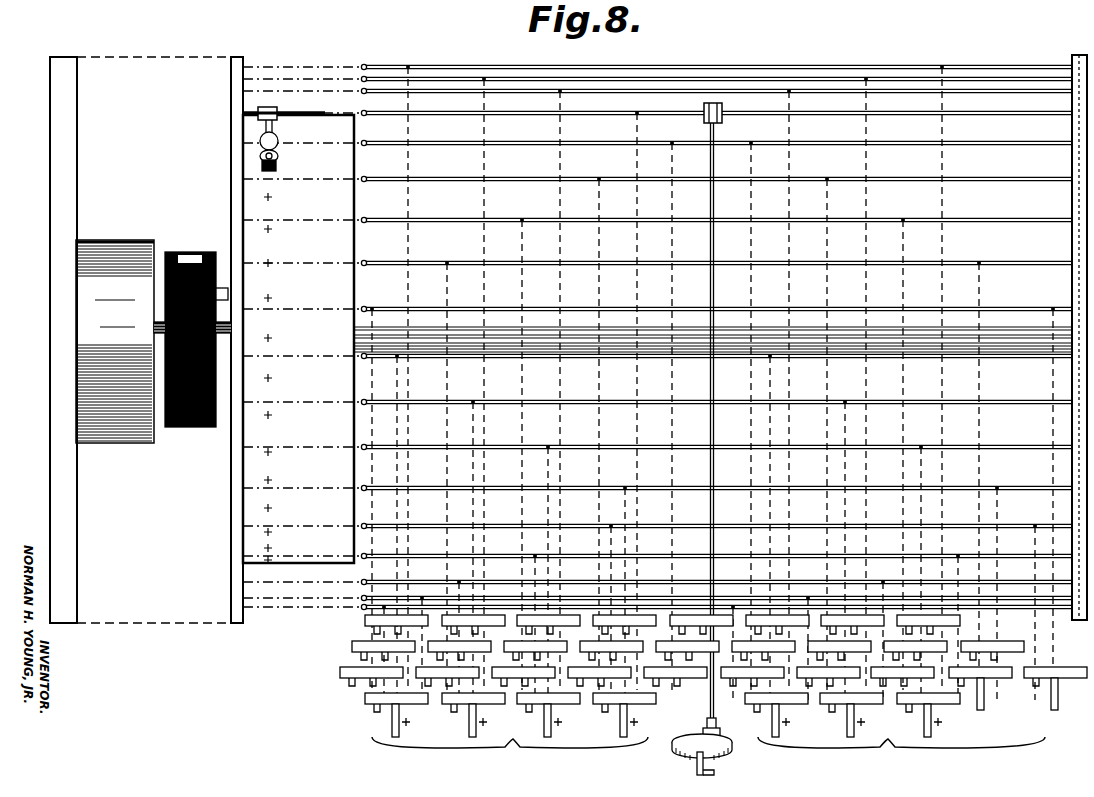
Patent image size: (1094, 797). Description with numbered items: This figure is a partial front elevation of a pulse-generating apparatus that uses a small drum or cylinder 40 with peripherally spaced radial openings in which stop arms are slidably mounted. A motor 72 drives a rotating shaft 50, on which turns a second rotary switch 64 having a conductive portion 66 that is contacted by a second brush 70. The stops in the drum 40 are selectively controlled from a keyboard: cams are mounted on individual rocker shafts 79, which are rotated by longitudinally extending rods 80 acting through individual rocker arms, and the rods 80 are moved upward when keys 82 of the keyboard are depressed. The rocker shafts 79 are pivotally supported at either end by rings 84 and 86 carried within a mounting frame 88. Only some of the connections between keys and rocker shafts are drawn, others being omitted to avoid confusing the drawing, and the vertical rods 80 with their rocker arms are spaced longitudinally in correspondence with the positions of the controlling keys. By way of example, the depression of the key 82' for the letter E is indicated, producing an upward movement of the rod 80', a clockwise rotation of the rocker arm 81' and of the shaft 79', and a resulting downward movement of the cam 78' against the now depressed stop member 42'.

The drum 40 is at (354, 291).
The depressed stop member 42' is at (291, 160).
The rotating shaft 50 is at (418, 340).
The second rotary switch 64 is at (180, 428).
The conductive portion 66 is at (188, 252).
The second brush 70 is at (222, 288).
The motor 72 is at (118, 240).
The cam 78' is at (284, 128).
The rocker shafts 79 is at (716, 336).
The rocker shaft 79' is at (465, 126).
The longitudinally extending rods 80 is at (712, 382).
The rod 80' is at (730, 429).
The rocker arm 81' is at (735, 118).
The keys 82 is at (713, 697).
The key 82' is at (721, 746).
The ring 84 is at (231, 97).
The ring 86 is at (1078, 55).
The mounting frame 88 is at (50, 211).